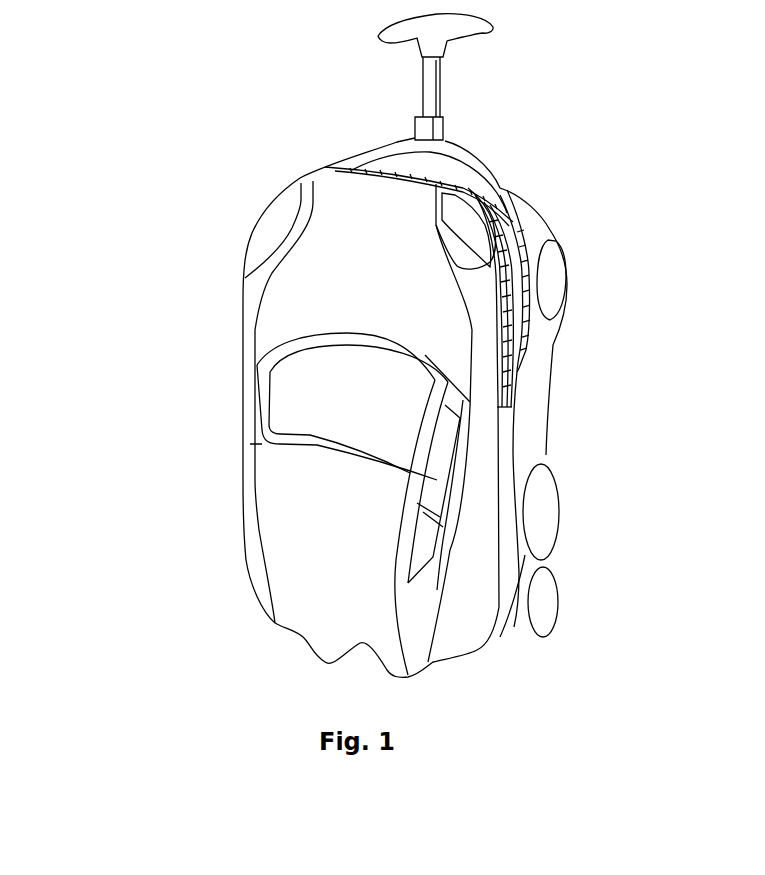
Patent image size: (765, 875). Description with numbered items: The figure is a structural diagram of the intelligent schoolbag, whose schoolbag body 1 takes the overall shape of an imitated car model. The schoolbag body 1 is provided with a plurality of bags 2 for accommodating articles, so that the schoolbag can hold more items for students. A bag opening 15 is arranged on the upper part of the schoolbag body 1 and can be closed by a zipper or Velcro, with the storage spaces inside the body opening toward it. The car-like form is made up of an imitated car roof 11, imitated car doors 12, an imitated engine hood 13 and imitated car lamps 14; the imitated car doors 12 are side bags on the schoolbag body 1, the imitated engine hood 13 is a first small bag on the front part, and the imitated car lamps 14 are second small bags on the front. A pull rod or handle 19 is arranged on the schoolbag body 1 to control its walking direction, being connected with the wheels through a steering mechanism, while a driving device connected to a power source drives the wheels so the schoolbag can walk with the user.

The schoolbag body 1 is at (97, 130).
The bags 2 is at (555, 292).
The imitated car roof 11 is at (317, 503).
The imitated car doors 12 is at (440, 480).
The imitated engine hood 13 is at (362, 278).
The imitated car lamps 14 is at (463, 229).
The bag opening 15 is at (515, 343).
The pull rod or handle 19 is at (378, 41).